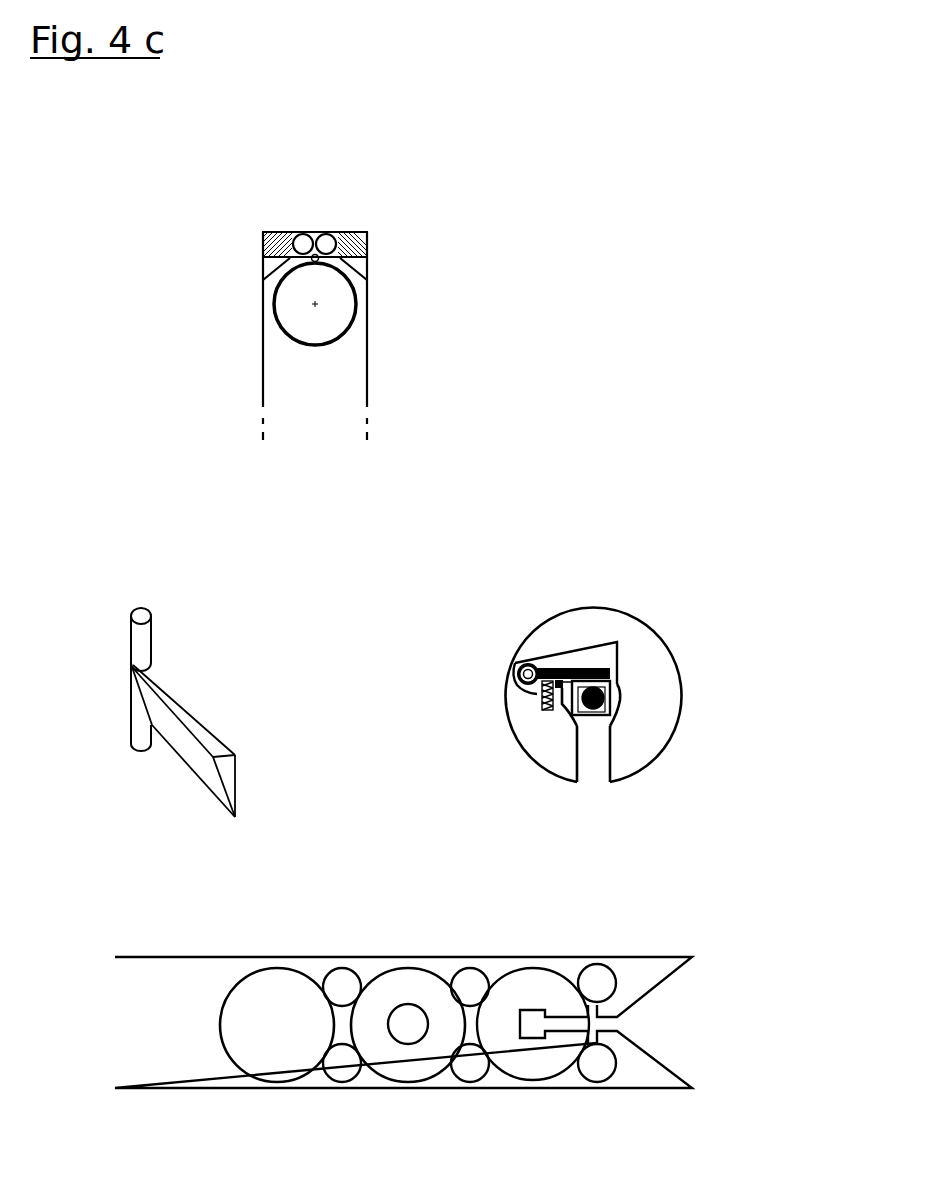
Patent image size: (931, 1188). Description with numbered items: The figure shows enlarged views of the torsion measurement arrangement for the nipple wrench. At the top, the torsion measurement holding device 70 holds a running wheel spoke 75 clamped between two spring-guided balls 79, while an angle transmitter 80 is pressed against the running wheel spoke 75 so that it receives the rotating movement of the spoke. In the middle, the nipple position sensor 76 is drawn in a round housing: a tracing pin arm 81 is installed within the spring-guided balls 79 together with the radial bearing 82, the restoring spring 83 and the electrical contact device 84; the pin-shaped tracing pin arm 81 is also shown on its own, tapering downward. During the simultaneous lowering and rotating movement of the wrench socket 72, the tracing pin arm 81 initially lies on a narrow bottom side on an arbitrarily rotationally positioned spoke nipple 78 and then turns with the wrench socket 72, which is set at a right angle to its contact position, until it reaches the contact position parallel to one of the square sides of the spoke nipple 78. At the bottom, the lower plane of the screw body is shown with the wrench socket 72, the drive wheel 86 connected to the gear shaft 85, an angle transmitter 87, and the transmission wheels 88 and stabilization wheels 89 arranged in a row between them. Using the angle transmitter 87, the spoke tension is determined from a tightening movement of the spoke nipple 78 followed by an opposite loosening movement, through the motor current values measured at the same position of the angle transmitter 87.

The torsion measurement holding device 70 is at (402, 238).
The wrench socket 72 is at (533, 1065).
The running wheel spoke 75 is at (311, 259).
The nipple position sensor 76 is at (510, 578).
The spoke nipple 78 is at (612, 714).
The spring-guided balls 79 is at (300, 236).
The angle transmitter 80 is at (307, 307).
The tracing pin arm 81 is at (190, 712).
The radial bearing 82 is at (138, 634).
The restoring spring 83 is at (548, 699).
The electrical contact device 84 is at (552, 692).
The gear shaft 85 is at (403, 1018).
The drive wheel 86 is at (407, 1070).
The angle transmitter 87 is at (262, 1052).
The transmission wheels 88 is at (338, 1070).
The stabilization wheels 89 is at (598, 1070).